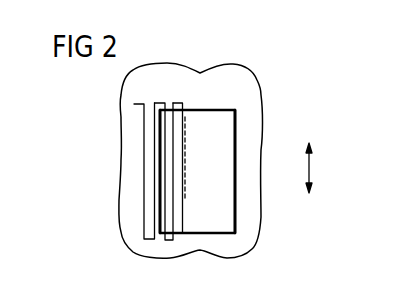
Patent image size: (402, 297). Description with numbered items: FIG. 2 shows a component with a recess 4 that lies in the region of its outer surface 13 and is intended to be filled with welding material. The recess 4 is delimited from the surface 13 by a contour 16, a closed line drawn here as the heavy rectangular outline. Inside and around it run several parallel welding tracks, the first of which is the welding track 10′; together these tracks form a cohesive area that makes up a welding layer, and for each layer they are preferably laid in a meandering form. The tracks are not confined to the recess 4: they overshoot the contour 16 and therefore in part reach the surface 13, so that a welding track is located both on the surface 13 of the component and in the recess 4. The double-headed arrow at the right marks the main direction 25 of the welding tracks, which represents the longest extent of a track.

The surface 13 is at (260, 90).
The recess 4 is at (223, 220).
The contour 16 is at (235, 150).
The welding track 10′ is at (145, 150).
The main direction 25 is at (312, 167).